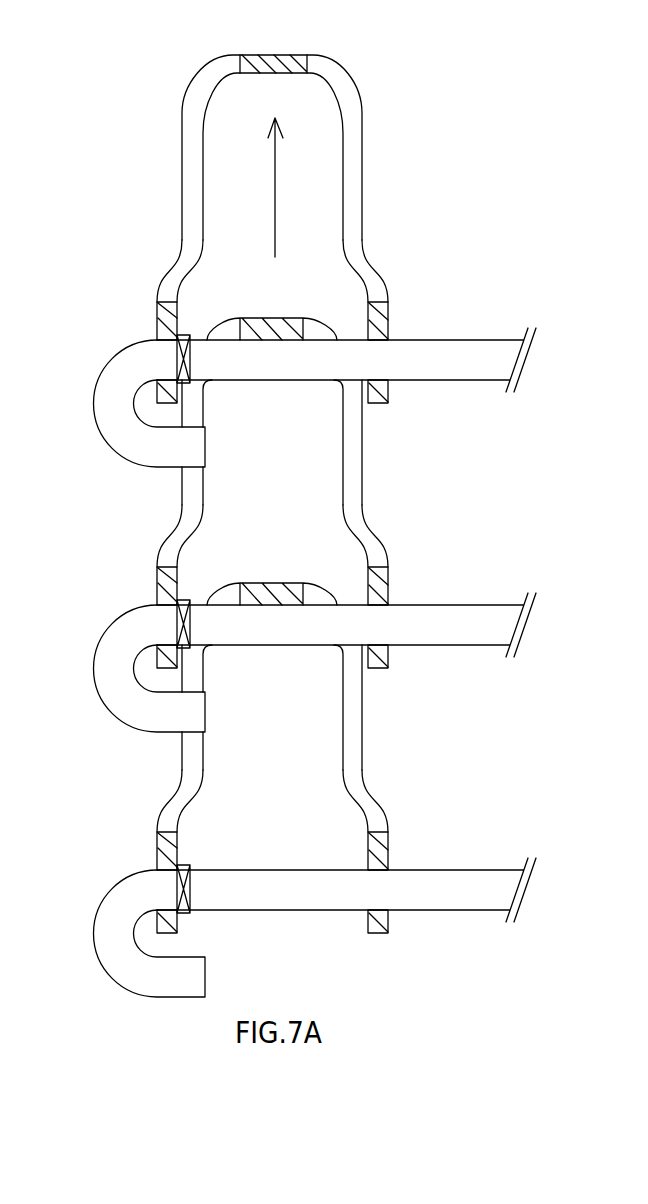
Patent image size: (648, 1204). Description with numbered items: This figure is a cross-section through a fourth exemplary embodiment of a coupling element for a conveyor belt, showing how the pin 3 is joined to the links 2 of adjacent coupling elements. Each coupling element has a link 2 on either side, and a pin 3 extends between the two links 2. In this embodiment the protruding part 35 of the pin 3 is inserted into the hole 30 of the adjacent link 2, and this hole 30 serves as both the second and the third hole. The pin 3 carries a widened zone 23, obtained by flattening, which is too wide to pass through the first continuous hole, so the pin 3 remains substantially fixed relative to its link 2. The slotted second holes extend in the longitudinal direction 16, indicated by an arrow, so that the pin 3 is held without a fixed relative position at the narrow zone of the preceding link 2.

The link 2 is at (358, 232).
The pin 3 is at (468, 357).
The longitudinal direction 16 is at (288, 148).
The widened zone 23 is at (183, 326).
The hole 30 is at (182, 255).
The protruding part 35 is at (123, 432).